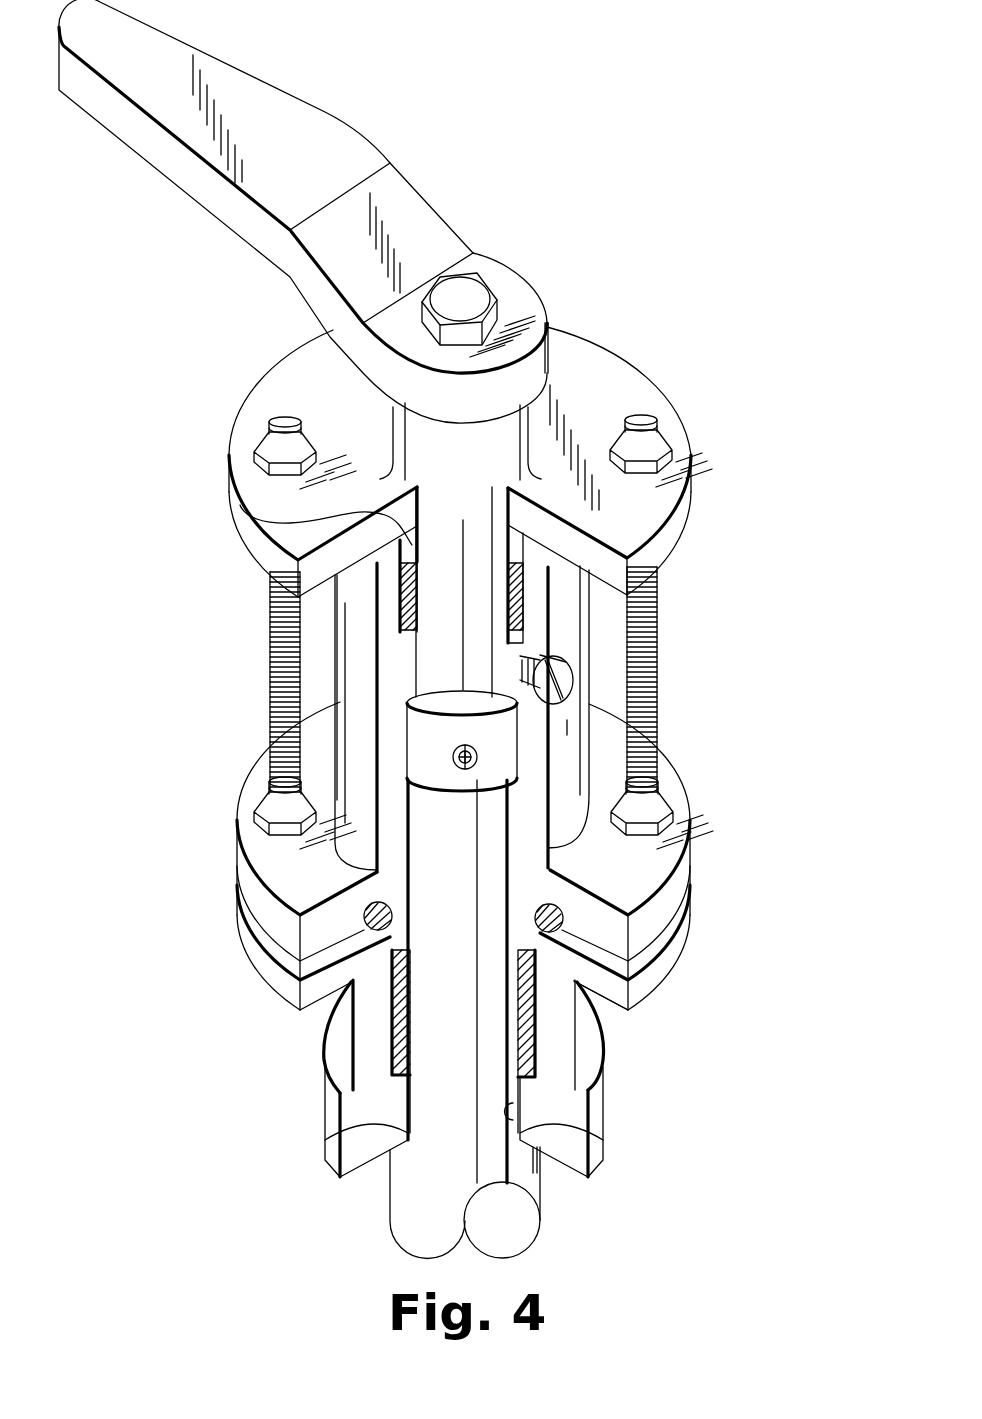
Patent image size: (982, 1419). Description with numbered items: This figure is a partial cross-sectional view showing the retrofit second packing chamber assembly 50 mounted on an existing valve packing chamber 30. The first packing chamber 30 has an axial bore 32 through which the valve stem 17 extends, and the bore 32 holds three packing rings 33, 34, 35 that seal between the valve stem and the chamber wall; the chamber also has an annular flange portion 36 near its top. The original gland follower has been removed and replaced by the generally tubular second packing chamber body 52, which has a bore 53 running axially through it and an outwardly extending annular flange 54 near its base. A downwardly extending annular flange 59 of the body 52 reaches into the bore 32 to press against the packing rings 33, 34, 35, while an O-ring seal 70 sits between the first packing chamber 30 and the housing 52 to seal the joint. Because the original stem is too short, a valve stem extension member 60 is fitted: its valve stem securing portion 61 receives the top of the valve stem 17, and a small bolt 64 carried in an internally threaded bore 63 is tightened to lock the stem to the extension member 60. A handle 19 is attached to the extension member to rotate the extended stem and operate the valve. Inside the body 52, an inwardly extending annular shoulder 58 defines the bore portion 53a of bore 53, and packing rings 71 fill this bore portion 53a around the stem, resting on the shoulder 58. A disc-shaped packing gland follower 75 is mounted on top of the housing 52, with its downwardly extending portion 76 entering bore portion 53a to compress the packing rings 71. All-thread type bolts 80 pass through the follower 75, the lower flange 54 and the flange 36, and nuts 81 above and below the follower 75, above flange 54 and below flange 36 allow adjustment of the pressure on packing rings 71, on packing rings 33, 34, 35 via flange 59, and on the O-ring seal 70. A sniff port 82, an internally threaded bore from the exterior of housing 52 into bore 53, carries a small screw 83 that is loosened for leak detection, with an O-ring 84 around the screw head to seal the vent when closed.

The valve stem 17 is at (418, 1197).
The handle 19 is at (307, 127).
The packing chamber 30 is at (603, 1068).
The axial bore 32 is at (590, 1130).
The packing ring 33 is at (353, 1040).
The packing ring 34 is at (353, 1077).
The packing ring 35 is at (353, 1117).
The annular flange portion 36 is at (270, 973).
The retrofit second packing chamber assembly 50 is at (793, 570).
The second packing chamber body 52 is at (355, 655).
The bore 53 is at (430, 665).
The bore portion 53a is at (300, 605).
The annular flange 54 is at (660, 857).
The inwardly extending annular shoulder 58 is at (545, 655).
The downwardly extending annular flange 59 is at (350, 983).
The valve stem extension member 60 is at (523, 600).
The valve stem securing portion 61 is at (430, 737).
The internally threaded bore 63 is at (466, 772).
The small bolt 64 is at (460, 768).
The O-ring seal 70 is at (588, 1070).
The packing ring 71 is at (480, 535).
The packing gland follower 75 is at (647, 395).
The downwardly extending portion 76 is at (240, 505).
The all-thread type bolt 80 is at (292, 601).
The nut 81 is at (255, 453).
The sniff port 82 is at (548, 800).
The small screw 83 is at (567, 727).
The O-ring 84 is at (560, 700).